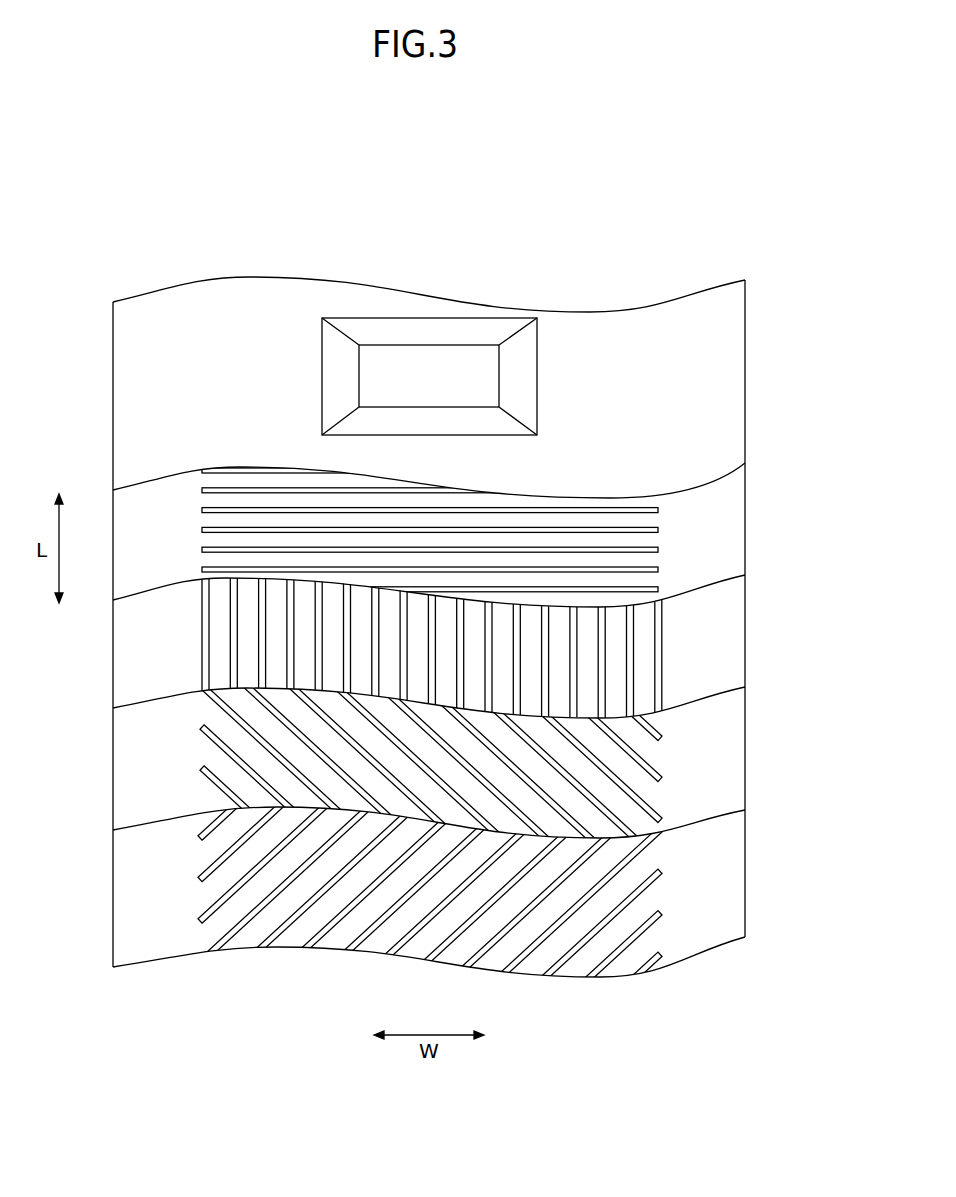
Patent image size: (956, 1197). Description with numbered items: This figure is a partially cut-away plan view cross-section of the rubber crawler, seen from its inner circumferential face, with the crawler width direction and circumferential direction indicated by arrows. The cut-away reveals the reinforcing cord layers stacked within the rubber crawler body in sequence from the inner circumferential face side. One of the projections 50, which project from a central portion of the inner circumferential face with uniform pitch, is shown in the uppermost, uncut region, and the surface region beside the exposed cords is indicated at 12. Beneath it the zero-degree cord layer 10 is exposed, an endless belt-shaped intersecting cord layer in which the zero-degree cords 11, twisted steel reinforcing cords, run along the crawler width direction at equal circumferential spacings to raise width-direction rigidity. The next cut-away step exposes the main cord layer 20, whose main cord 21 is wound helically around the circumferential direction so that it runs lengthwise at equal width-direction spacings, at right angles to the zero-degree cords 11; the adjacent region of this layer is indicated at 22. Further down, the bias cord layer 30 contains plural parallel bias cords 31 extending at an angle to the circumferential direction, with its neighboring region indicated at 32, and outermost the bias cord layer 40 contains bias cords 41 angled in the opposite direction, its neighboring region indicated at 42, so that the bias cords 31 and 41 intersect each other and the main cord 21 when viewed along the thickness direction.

The 0° cord layer 10 is at (472, 530).
The 0° cords 11 is at (658, 521).
The first layer / substrate 12 is at (742, 560).
The main cord layer 20 is at (347, 650).
The main cord 21 is at (262, 615).
The second layer 22 is at (742, 648).
The bias cord layer 30 is at (347, 753).
The bias cords 31 is at (232, 712).
The third layer 32 is at (738, 763).
The bias cord layer 40 is at (347, 805).
The bias cords 41 is at (217, 821).
The fourth layer 42 is at (738, 871).
The projections 50 is at (537, 380).